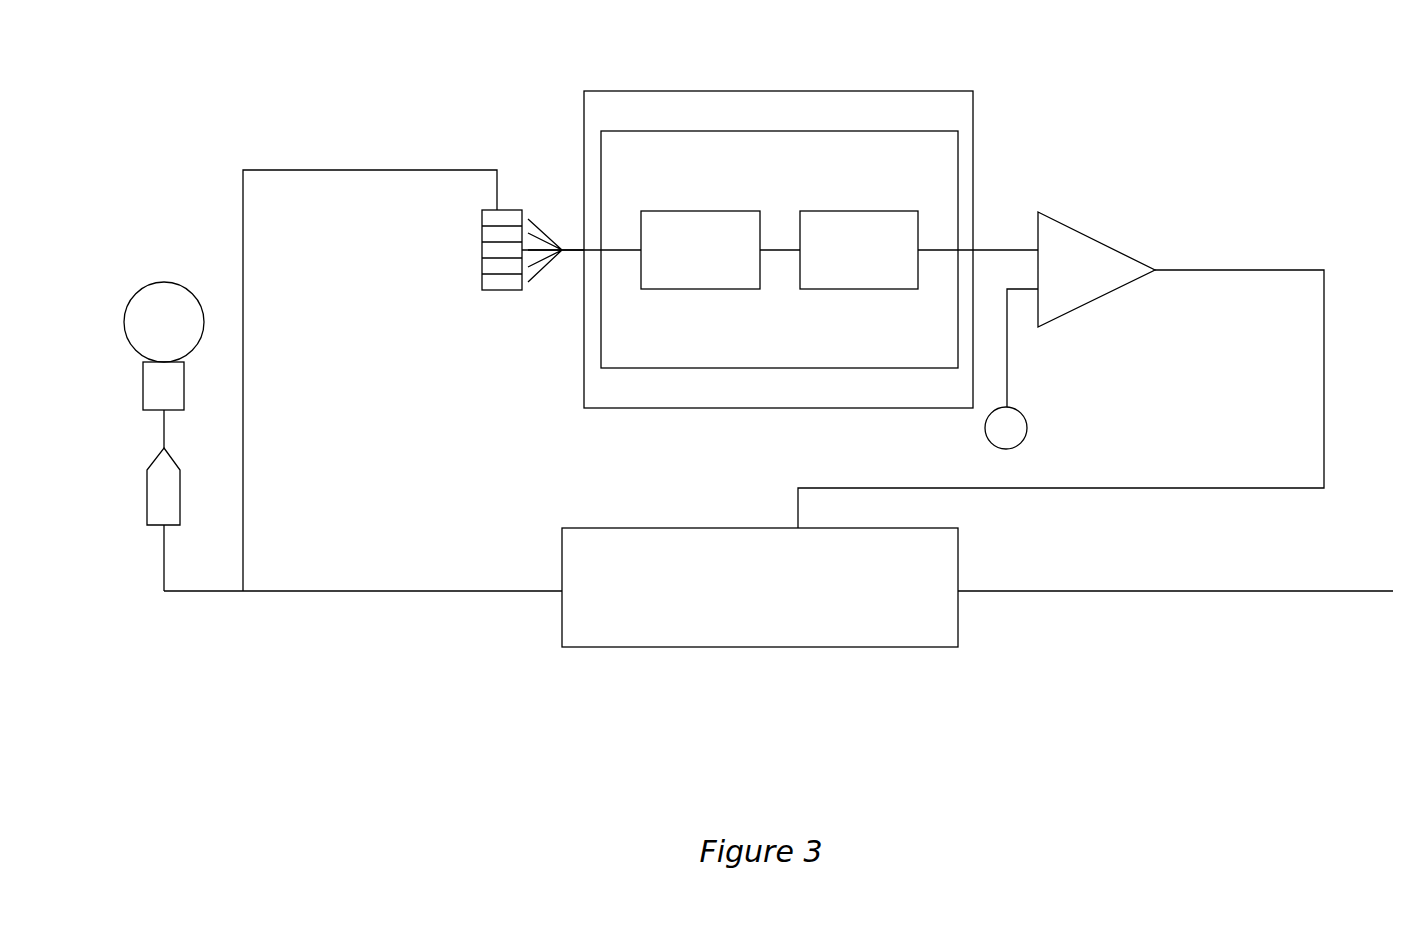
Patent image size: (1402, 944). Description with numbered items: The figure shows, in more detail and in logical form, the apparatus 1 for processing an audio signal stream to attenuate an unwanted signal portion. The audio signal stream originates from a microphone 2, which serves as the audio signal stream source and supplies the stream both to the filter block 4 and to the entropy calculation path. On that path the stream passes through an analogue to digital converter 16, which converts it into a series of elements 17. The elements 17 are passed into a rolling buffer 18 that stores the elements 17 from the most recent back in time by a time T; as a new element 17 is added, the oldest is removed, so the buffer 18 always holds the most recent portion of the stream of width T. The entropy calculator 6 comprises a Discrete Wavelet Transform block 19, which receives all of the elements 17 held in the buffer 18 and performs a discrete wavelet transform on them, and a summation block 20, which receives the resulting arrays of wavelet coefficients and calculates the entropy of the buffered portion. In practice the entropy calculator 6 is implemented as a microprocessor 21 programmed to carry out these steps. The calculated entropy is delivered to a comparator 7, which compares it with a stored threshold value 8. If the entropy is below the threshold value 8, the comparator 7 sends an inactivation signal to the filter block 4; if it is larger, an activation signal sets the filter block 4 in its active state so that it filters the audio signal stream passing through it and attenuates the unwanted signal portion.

The apparatus 1 is at (173, 158).
The microphone 2 is at (149, 341).
The analogue to digital converter 16 is at (155, 494).
The elements 17 is at (487, 218).
The rolling buffer 18 is at (449, 280).
The entropy calculator 6 is at (653, 82).
The microprocessor 21 is at (901, 126).
The Discrete Wavelet Transform block 19 is at (700, 250).
The summation block 20 is at (859, 250).
The comparator 7 is at (1096, 269).
The threshold value 8 is at (1011, 369).
The filter block 4 is at (760, 587).